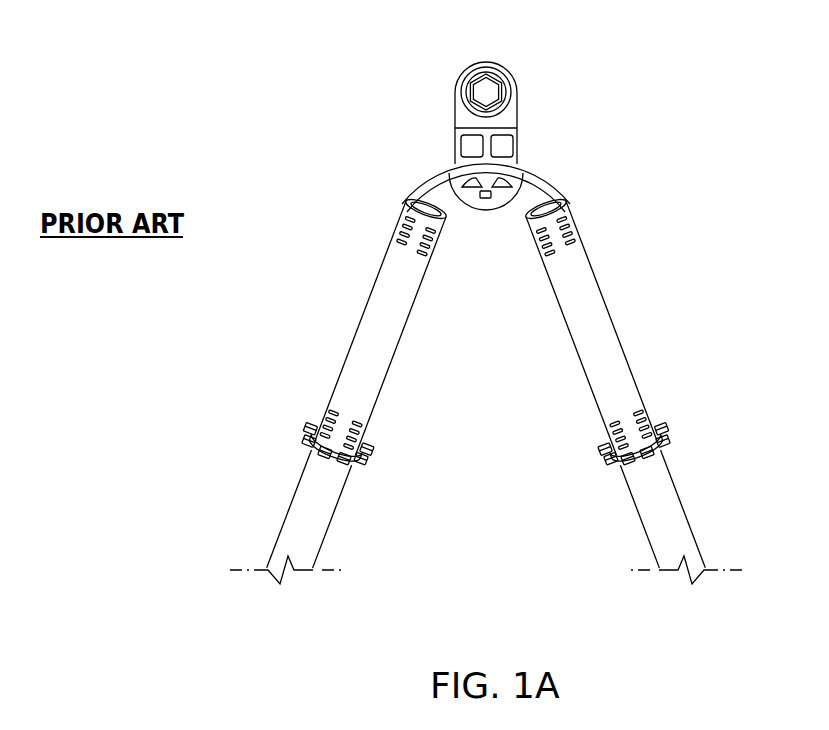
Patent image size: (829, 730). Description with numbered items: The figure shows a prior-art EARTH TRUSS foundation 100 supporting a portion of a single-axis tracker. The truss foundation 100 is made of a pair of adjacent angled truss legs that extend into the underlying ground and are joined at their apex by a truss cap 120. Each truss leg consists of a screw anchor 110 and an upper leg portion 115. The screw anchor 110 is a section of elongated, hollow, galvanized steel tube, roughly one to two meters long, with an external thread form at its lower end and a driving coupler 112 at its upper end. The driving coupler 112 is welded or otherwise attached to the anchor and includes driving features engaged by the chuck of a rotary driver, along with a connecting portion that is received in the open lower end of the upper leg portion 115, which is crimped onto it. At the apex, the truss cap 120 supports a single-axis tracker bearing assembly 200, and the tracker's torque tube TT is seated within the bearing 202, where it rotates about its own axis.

The truss foundation 100 is at (284, 125).
The screw anchor 110 is at (290, 527).
The driving coupler 112 is at (297, 417).
The upper leg portion 115 is at (362, 345).
The truss cap 120 is at (558, 181).
The single-axis tracker bearing assembly 200 is at (537, 83).
The bearing 202 is at (456, 90).
The torque tube TT is at (482, 68).